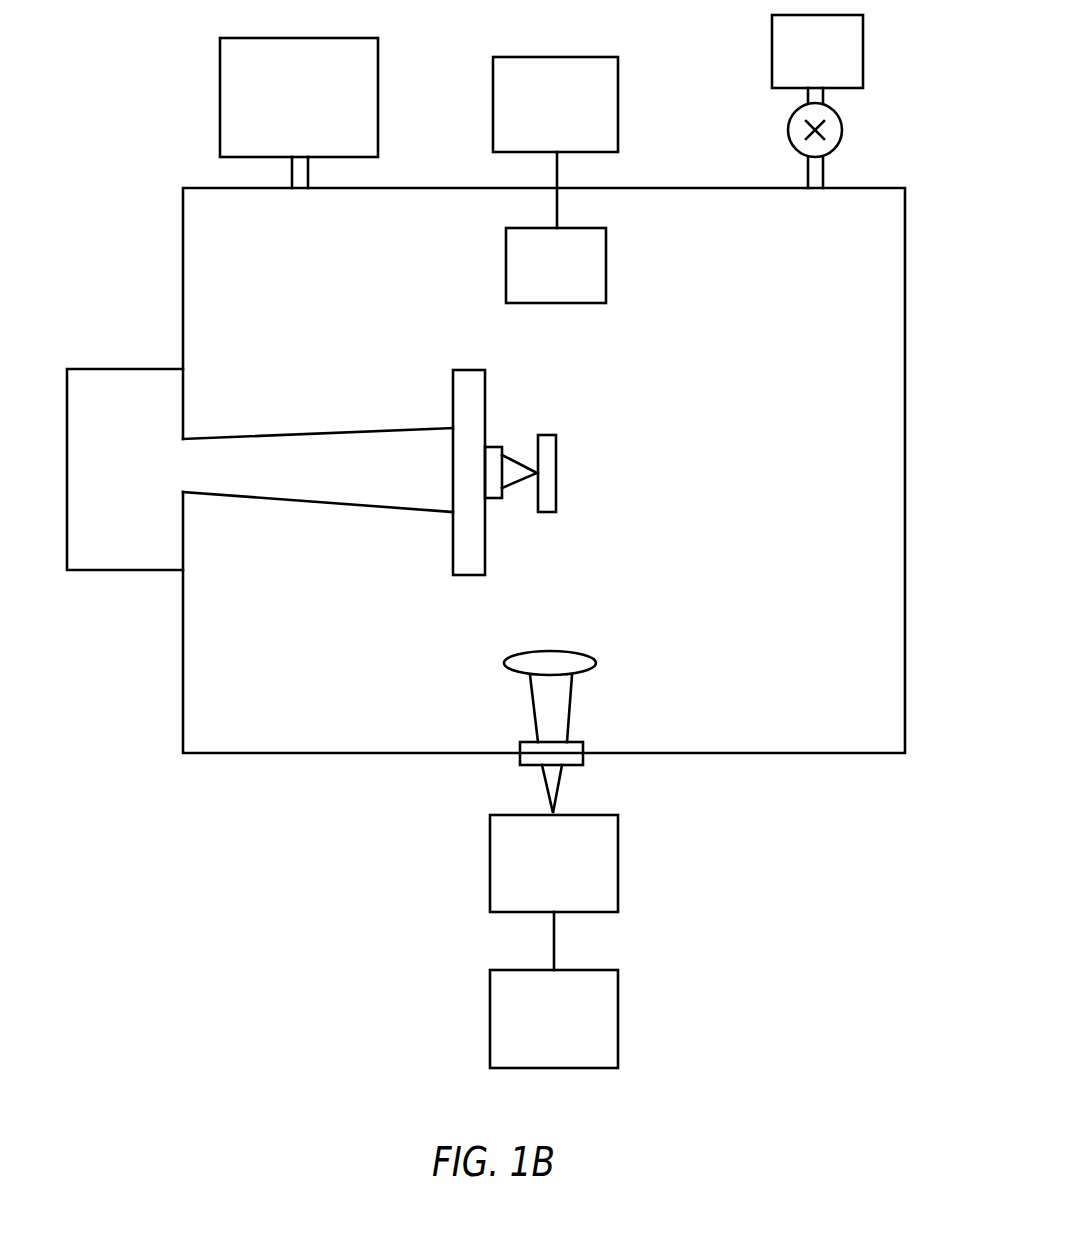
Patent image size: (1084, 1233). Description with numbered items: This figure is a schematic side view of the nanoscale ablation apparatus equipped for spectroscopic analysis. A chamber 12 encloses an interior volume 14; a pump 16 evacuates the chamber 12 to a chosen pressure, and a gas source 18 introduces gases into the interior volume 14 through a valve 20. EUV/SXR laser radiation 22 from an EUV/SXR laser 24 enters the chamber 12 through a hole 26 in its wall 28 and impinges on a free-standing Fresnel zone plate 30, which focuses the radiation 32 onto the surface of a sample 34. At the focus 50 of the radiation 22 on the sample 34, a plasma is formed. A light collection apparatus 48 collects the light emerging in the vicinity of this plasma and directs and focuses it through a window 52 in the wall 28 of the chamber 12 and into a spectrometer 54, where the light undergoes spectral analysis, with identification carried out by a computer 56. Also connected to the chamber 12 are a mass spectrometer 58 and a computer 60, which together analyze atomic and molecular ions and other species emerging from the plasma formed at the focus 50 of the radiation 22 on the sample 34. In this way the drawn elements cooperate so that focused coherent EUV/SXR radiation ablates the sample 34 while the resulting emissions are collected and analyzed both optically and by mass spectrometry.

The chamber 12 is at (288, 760).
The interior volume 14 is at (396, 325).
The pump 16 is at (284, 106).
The gas source 18 is at (804, 64).
The valve 20 is at (843, 136).
The EUV/SXR laser radiation 22 is at (366, 483).
The EUV/SXR laser 24 is at (132, 473).
The hole 26 is at (187, 468).
The wall 28 is at (905, 725).
The Fresnel zone plate 30 is at (493, 444).
The focused radiation 32 is at (527, 440).
The sample 34 is at (560, 435).
The light collection apparatus 48 is at (570, 652).
The focus 50 is at (533, 483).
The window 52 is at (575, 743).
The spectrometer 54 is at (571, 878).
The computer 56 is at (571, 1035).
The mass spectrometer 58 is at (572, 276).
The computer 60 is at (571, 118).